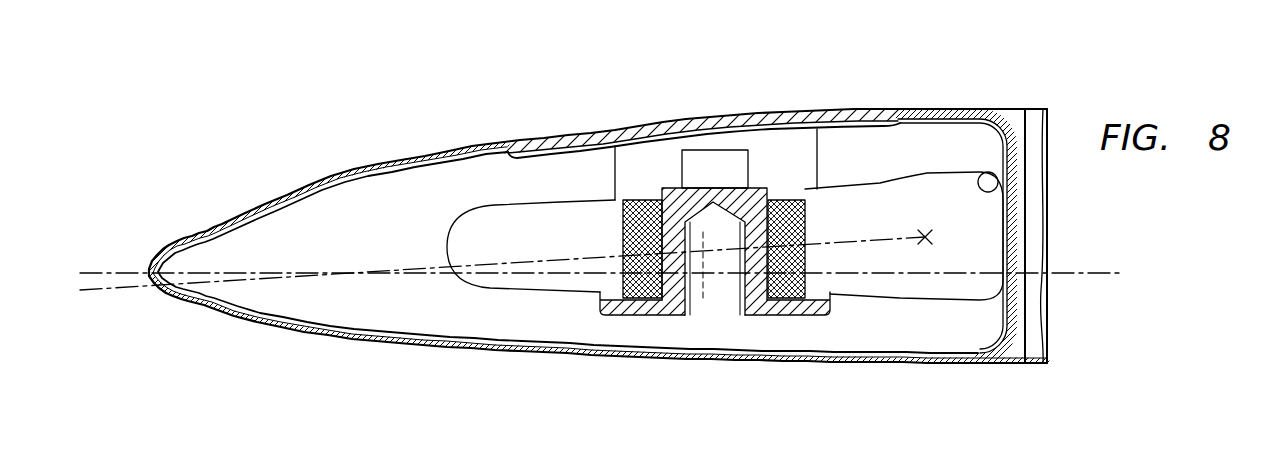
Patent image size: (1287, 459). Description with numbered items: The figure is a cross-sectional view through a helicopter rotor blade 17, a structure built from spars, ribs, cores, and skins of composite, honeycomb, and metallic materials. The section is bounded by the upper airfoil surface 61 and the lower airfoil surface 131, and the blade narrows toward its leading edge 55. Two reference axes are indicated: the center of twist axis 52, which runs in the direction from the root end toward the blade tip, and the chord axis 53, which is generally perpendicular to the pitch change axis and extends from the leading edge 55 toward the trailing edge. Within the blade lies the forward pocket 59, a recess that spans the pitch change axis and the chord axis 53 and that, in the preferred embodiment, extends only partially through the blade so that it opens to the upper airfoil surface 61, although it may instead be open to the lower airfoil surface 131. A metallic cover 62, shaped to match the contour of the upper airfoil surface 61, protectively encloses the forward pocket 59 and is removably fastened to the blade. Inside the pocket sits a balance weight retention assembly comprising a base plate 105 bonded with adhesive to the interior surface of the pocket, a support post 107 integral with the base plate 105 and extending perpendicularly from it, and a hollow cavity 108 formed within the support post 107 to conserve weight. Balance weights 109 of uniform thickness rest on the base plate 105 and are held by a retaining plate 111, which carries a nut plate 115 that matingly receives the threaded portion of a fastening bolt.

The rotor blade 17 is at (250, 156).
The center of twist axis 52 is at (925, 237).
The chord axis 53 is at (1100, 273).
The leading edge 55 is at (157, 295).
The forward pocket 59 is at (980, 172).
The upper airfoil surface 61 is at (998, 109).
The cover 62 is at (580, 131).
The base plate 105 is at (597, 301).
The support post 107 is at (722, 190).
The hollow cavity 108 is at (745, 290).
The balance weight 109 is at (623, 233).
The retaining plate 111 is at (792, 200).
The nut plate 115 is at (682, 168).
The lower airfoil surface 131 is at (365, 346).